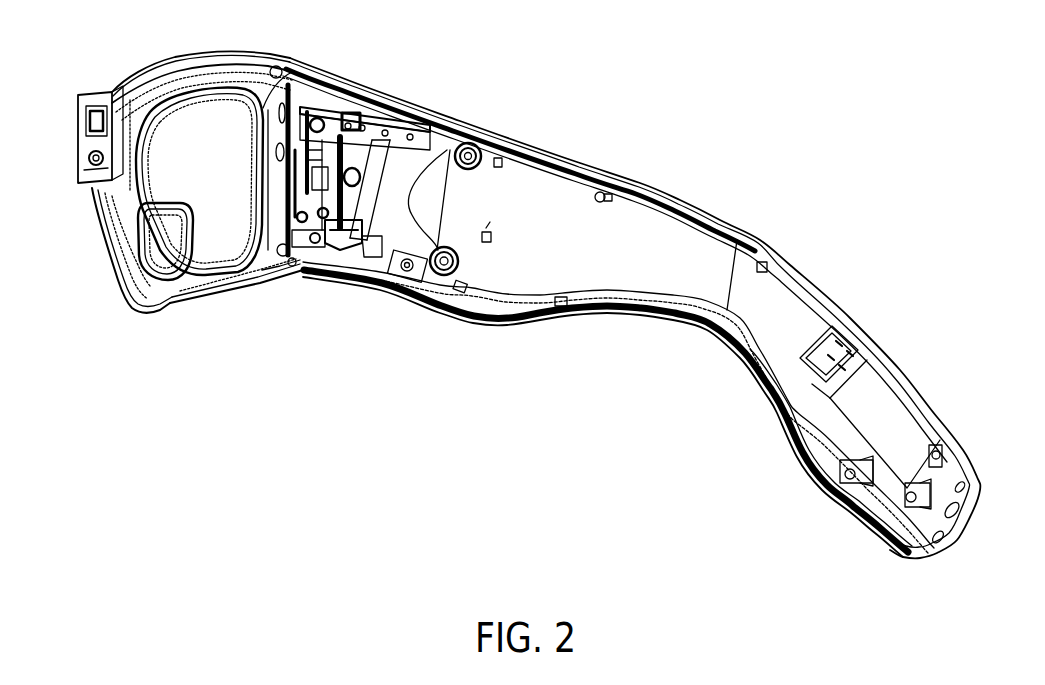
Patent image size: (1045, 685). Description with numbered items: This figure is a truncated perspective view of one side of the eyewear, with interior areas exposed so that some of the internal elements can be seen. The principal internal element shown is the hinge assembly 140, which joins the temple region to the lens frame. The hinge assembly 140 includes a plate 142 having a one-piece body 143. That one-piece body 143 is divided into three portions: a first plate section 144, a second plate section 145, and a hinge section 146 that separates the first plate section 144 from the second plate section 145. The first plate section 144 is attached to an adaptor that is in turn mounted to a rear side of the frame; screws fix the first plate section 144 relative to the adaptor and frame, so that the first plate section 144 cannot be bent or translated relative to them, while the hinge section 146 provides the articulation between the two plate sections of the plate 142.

The hinge assembly 140 is at (442, 101).
The plate 142 is at (437, 165).
The one-piece body 143 is at (380, 237).
The first plate section 144 is at (363, 148).
The second plate section 145 is at (417, 238).
The hinge section 146 is at (375, 158).